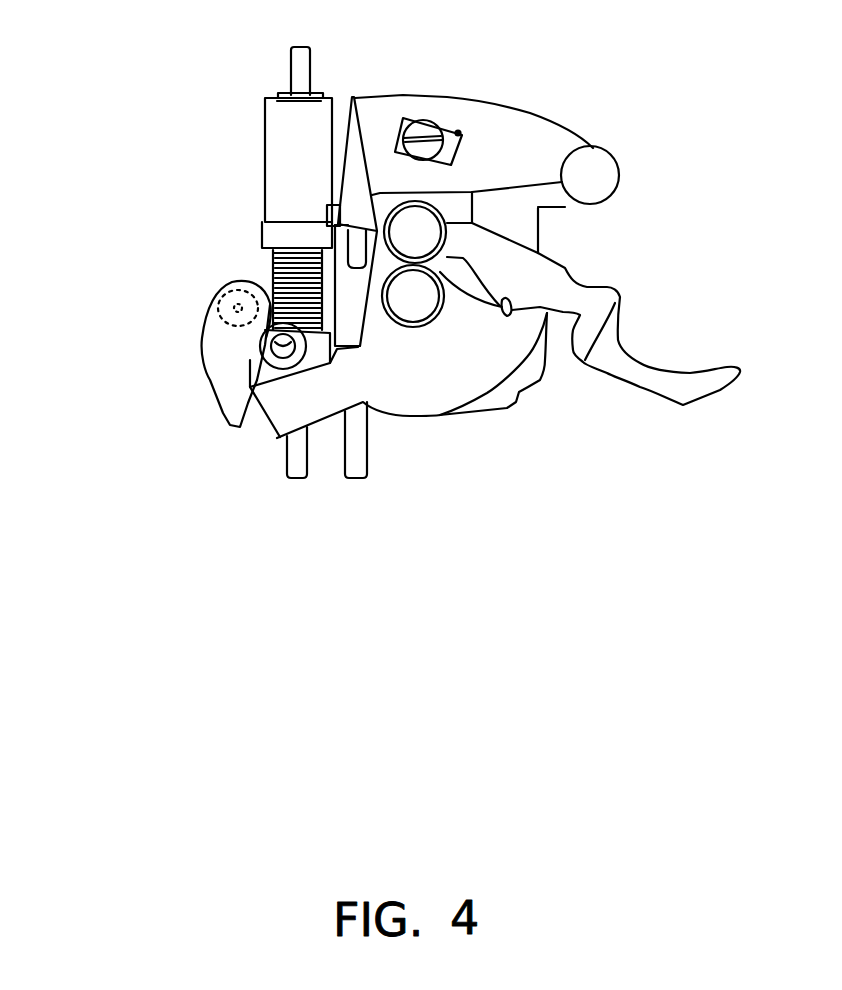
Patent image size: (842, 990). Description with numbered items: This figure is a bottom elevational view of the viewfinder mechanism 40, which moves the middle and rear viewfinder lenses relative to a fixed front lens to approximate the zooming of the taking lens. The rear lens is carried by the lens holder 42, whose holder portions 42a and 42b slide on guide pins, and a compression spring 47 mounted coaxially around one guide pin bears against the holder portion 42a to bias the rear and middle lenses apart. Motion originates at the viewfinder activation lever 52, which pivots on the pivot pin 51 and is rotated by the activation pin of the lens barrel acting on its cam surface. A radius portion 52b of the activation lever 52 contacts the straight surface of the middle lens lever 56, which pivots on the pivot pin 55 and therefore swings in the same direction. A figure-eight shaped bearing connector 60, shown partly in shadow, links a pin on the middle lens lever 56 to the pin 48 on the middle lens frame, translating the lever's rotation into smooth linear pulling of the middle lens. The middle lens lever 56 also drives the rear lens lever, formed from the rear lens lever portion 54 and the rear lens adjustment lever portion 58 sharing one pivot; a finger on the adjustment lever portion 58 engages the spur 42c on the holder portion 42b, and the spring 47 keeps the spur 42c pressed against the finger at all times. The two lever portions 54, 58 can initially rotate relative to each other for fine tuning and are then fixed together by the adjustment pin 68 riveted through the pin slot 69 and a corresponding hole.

The viewfinder mechanism 40 is at (132, 388).
The lens holder 42 is at (266, 155).
The holder portion 42a is at (308, 183).
The holder portion 42b is at (366, 309).
The spur 42c is at (352, 98).
The compression spring 47 is at (273, 270).
The pin 48 is at (287, 357).
The pivot pin 51 is at (427, 250).
The viewfinder activation lever 52 is at (717, 388).
The radius portion 52b is at (507, 297).
The rear lens lever portion 54 is at (540, 208).
The pivot pin 55 is at (431, 315).
The middle lens lever 56 is at (202, 338).
The rear lens adjustment lever portion 58 is at (508, 108).
The bearing connector 60 is at (272, 288).
The adjustment pin 68 is at (430, 117).
The pin slot 69 is at (458, 133).